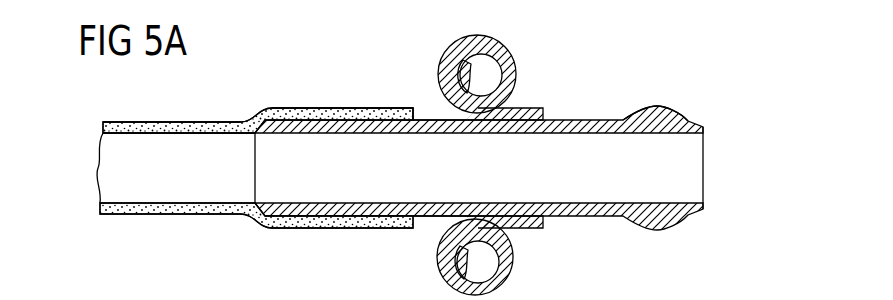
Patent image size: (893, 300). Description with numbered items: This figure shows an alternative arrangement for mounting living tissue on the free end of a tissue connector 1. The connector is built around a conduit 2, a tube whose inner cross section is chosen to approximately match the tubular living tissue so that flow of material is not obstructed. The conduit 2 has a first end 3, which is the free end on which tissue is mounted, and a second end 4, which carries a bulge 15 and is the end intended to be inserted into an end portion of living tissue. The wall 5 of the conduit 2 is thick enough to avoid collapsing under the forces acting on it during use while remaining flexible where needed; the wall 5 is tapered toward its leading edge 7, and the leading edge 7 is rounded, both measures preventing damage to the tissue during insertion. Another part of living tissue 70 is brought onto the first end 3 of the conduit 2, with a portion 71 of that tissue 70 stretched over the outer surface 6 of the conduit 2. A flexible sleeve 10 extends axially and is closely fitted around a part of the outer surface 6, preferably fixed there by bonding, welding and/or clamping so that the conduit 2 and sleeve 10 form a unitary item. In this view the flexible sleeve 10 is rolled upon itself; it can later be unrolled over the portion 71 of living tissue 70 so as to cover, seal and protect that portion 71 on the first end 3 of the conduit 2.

The tissue connector 1 is at (630, 62).
The conduit 2 is at (603, 190).
The first end 3 is at (270, 178).
The second end 4 is at (483, 163).
The wall 5 is at (427, 118).
The outer surface 6 is at (428, 218).
The leading edge 7 is at (255, 142).
The flexible sleeve 10 is at (534, 53).
The bulge 15 is at (668, 107).
The living tissue 70 is at (138, 122).
The portion of living tissue 71 is at (311, 108).